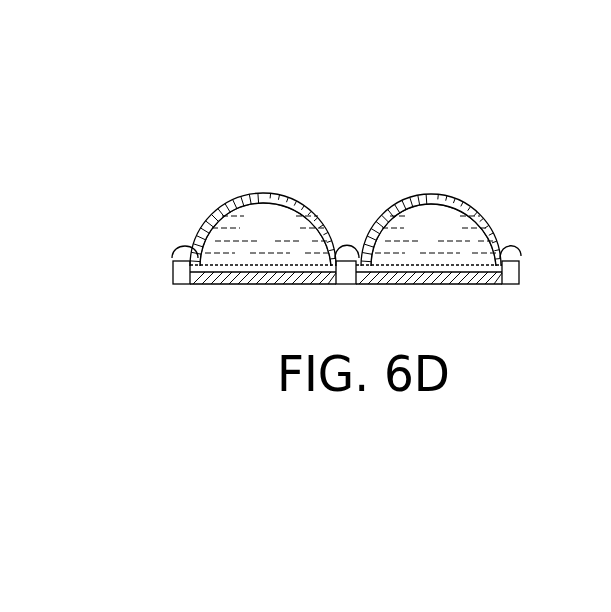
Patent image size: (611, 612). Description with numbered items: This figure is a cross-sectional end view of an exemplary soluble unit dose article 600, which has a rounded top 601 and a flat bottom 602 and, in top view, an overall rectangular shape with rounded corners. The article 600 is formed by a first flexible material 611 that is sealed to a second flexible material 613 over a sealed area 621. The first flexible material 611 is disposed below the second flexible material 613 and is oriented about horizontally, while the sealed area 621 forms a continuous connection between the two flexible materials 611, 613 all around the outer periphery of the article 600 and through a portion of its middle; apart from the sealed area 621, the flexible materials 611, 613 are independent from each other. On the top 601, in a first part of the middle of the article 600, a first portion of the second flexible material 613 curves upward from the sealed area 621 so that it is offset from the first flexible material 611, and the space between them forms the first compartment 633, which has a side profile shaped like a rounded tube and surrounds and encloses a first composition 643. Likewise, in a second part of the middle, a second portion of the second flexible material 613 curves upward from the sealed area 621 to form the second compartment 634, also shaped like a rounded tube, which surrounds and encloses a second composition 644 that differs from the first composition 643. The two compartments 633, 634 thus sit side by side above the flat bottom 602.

The soluble unit dose article 600 is at (170, 148).
The rounded top 601 is at (201, 175).
The flat bottom 602 is at (214, 307).
The first flexible material 611 is at (282, 285).
The second flexible material 613 is at (277, 200).
The sealed area 621 is at (182, 244).
The first compartment 633 is at (228, 205).
The second compartment 634 is at (466, 228).
The first composition 643 is at (291, 237).
The second composition 644 is at (452, 237).